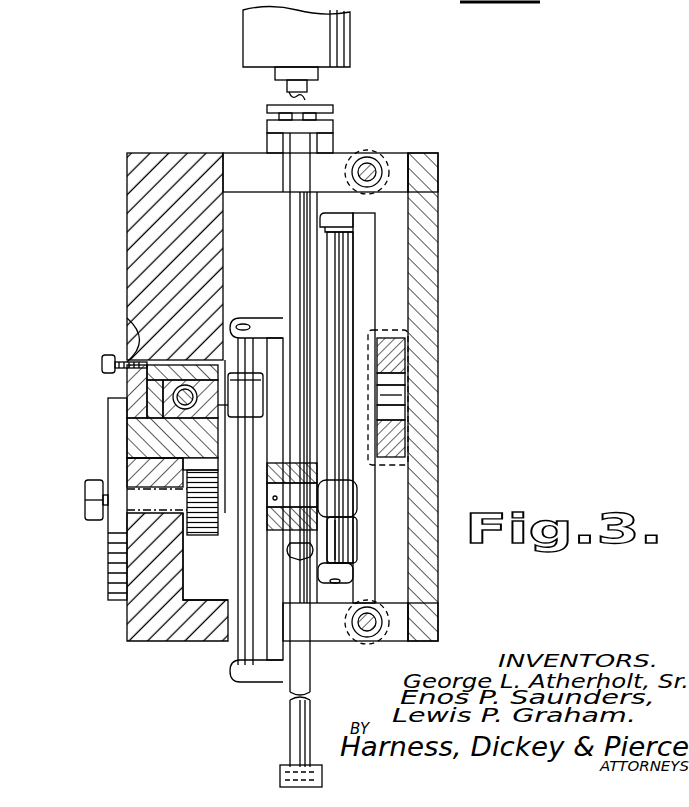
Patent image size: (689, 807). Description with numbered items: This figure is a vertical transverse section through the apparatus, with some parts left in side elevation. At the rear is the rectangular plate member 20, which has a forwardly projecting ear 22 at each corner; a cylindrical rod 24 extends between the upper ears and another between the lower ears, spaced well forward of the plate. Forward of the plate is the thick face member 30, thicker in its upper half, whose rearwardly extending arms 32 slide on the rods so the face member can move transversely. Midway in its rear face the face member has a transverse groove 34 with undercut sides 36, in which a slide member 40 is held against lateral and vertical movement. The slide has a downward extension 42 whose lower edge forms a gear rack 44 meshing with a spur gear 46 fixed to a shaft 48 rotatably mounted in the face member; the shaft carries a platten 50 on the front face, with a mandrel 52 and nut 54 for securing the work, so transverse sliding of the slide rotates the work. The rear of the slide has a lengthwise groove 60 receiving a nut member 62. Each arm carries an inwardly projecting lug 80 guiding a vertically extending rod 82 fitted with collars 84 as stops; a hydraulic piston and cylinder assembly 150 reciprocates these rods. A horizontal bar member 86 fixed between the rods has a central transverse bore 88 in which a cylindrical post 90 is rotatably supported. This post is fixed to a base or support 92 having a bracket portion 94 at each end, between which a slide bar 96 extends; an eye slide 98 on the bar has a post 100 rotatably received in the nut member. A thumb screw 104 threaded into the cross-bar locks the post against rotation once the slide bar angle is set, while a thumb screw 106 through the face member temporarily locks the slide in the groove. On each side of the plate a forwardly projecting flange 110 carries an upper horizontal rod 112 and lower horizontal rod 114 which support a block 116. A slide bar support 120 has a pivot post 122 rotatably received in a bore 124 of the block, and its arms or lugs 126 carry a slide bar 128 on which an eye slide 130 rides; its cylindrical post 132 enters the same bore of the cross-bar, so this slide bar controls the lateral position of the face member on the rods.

The plate member 20 is at (428, 220).
The ear 22 is at (405, 157).
The cylindrical rod 24 is at (368, 172).
The face member 30 is at (127, 215).
The arm 32 is at (232, 153).
The transverse groove 34 is at (172, 362).
The undercut portion 36 is at (168, 458).
The slide member 40 is at (127, 428).
The downward extension 42 is at (182, 472).
The gear rack 44 is at (195, 451).
The spur gear 46 is at (201, 535).
The shaft 48 is at (172, 502).
The platten 50 is at (112, 573).
The mandrel 52 is at (90, 500).
The nut 54 is at (88, 482).
The groove 60 is at (128, 385).
The nut member 62 is at (172, 397).
The lug 80 is at (320, 165).
The vertically extending rod 82 is at (290, 210).
The collar 84 is at (265, 143).
The bar member 86 is at (320, 468).
The transverse bore 88 is at (320, 494).
The cylindrical post 90 is at (288, 532).
The base or support 92 is at (274, 499).
The bracket portion 94 is at (262, 325).
The slide bar 96 is at (238, 580).
The eye slide 98 is at (245, 389).
The post 100 is at (238, 406).
The thumb screw 104 is at (320, 553).
The thumb screw 106 is at (103, 360).
The flange 110 is at (408, 320).
The upper horizontal rod 112 is at (400, 345).
The lower horizontal rod 114 is at (400, 440).
The block 116 is at (395, 412).
The slide bar support 120 is at (373, 262).
The pivot post 122 is at (395, 379).
The bore 124 is at (395, 396).
The arm or lug 126 is at (348, 218).
The slide bar 128 is at (347, 297).
The eye slide 130 is at (345, 520).
The cylindrical post 132 is at (337, 498).
The hydraulic piston and cylinder assembly 150 is at (316, 39).